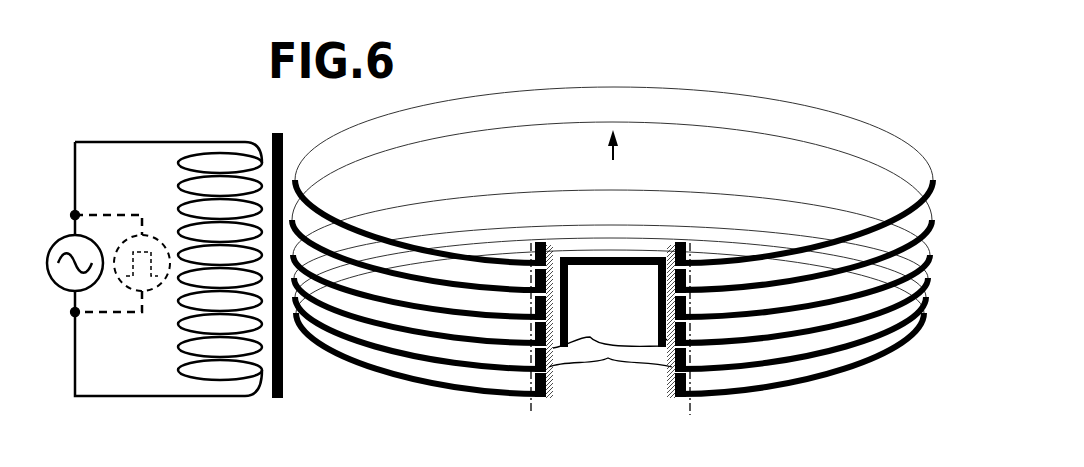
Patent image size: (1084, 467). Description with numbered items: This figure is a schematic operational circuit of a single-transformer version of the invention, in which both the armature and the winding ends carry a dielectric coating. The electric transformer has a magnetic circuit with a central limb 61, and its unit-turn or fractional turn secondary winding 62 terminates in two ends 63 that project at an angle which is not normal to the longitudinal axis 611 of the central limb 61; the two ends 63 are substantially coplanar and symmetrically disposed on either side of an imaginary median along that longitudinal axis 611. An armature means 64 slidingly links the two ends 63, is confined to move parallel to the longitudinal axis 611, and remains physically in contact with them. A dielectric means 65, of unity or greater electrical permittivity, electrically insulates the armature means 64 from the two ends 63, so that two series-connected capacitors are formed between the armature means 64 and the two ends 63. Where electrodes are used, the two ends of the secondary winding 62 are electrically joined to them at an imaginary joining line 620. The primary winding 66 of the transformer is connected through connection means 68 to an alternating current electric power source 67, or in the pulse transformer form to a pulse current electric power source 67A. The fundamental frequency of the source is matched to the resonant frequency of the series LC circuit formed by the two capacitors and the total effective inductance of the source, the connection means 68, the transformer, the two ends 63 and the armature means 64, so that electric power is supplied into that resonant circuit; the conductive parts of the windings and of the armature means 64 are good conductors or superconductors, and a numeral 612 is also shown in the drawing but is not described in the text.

The central limb 61 is at (291, 291).
The secondary winding 62 is at (612, 262).
The two ends 63 is at (610, 343).
The armature means 64 is at (613, 302).
The dielectric means 65 is at (610, 333).
The primary winding 66 is at (186, 273).
The alternating current electric power source 67 is at (94, 245).
The pulse current electric power source 67A is at (122, 291).
The connection means 68 is at (168, 289).
The longitudinal axis 611 is at (645, 161).
The core base 612 is at (610, 380).
The imaginary joining line 620 is at (625, 345).